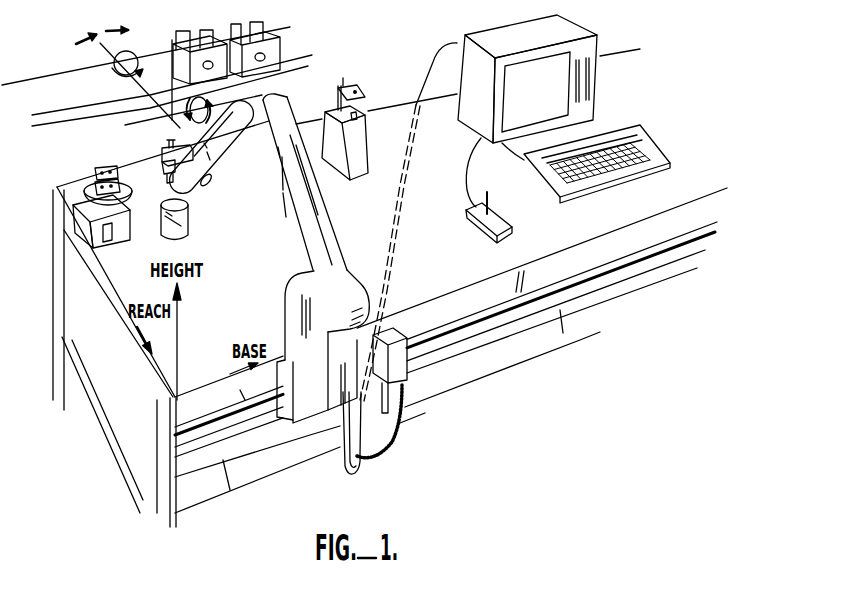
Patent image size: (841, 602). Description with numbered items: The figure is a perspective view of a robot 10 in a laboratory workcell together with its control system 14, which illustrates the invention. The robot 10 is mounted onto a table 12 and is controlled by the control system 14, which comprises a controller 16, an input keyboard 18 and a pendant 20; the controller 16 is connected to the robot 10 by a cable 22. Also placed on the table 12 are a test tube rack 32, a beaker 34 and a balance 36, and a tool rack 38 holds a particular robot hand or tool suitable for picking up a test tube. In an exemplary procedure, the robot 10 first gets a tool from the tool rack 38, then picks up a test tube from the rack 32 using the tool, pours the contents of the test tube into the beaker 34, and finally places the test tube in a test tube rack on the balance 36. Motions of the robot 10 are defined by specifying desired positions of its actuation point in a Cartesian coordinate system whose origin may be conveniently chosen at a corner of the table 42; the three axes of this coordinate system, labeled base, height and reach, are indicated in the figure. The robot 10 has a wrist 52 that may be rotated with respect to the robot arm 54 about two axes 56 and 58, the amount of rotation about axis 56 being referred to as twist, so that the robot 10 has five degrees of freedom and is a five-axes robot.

The robot 10 is at (352, 267).
The table 12 is at (586, 227).
The control system 14 is at (578, 123).
The controller 16 is at (565, 30).
The input keyboard 18 is at (648, 147).
The pendant 20 is at (494, 226).
The cable 22 is at (446, 46).
The test tube rack 32 is at (360, 88).
The beaker 34 is at (190, 217).
The balance 36 is at (90, 186).
The tool rack 38 is at (291, 55).
The corner of the table 42 is at (173, 398).
The wrist 52 is at (163, 155).
The robot arm 54 is at (227, 160).
The axis 56 is at (100, 43).
The axis 58 is at (210, 100).